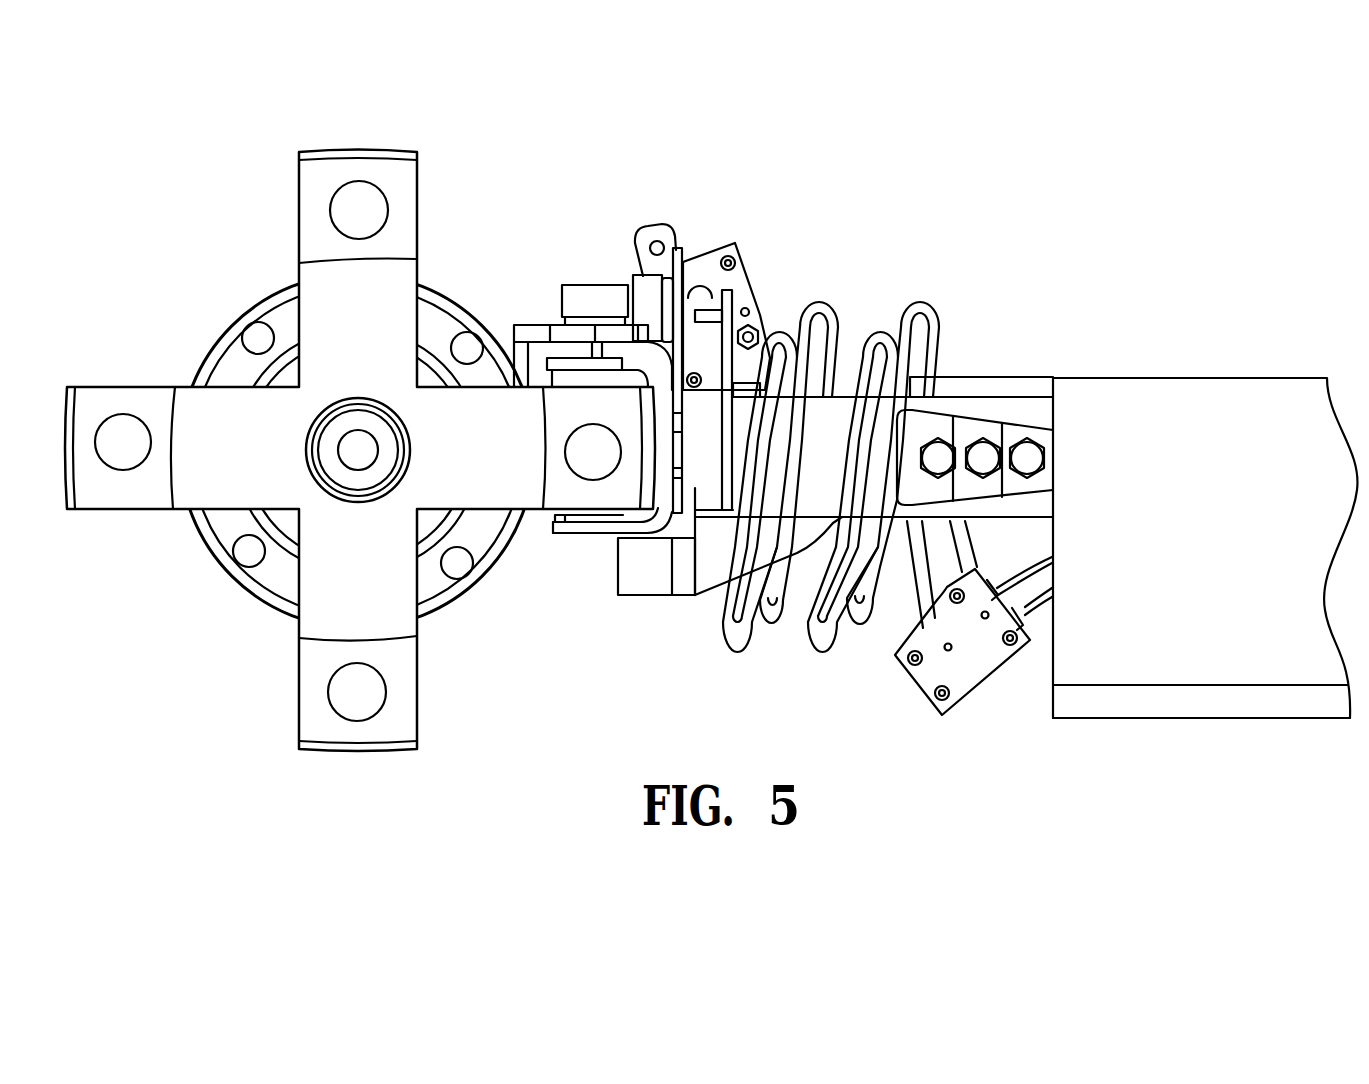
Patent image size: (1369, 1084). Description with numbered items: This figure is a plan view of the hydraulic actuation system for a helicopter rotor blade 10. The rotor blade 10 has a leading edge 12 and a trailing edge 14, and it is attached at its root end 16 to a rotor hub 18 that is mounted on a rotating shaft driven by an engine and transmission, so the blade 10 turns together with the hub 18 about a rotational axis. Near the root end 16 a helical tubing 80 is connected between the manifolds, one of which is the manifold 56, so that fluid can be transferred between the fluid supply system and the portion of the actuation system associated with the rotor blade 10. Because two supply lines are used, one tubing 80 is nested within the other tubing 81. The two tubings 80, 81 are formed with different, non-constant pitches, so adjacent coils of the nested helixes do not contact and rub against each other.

The rotor blade 10 is at (1205, 757).
The leading edge 12 is at (1243, 393).
The trailing edge 14 is at (1283, 707).
The root end 16 is at (563, 535).
The rotor hub 18 is at (260, 680).
The manifold 56 is at (918, 687).
The tubing 80 is at (930, 313).
The tubing 81 is at (880, 332).